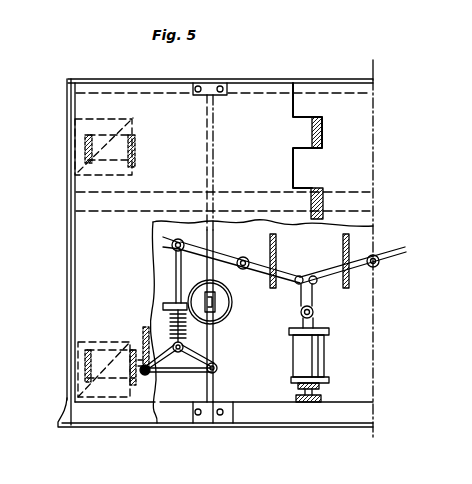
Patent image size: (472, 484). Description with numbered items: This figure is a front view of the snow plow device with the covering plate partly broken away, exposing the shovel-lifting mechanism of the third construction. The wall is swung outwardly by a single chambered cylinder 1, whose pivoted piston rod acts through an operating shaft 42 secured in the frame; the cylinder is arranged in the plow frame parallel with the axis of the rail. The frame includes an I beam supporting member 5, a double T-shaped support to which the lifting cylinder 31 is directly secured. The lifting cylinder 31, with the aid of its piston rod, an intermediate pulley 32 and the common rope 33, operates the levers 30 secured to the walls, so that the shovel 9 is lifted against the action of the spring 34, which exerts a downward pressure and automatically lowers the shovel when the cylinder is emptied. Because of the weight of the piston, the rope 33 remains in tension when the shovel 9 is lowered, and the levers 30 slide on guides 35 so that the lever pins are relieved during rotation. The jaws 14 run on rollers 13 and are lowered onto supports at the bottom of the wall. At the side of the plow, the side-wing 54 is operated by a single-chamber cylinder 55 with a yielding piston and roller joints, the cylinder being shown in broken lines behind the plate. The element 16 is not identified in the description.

The single chambered cylinder 1 is at (220, 304).
The I beam supporting member 5 is at (320, 396).
The shovel 9 is at (200, 428).
The roller 13 is at (146, 376).
The jaw 14 is at (144, 354).
The bottom plate 16 is at (78, 424).
The lever 30 is at (282, 276).
The lifting cylinder 31 is at (320, 358).
The intermediate pulley 32 is at (300, 314).
The common rope 33 is at (316, 298).
The spring 34 is at (186, 324).
The guide 35 is at (342, 238).
The operating shaft 42 is at (214, 153).
The side-wing 54 is at (58, 423).
The single-chamber cylinder 55 is at (136, 150).